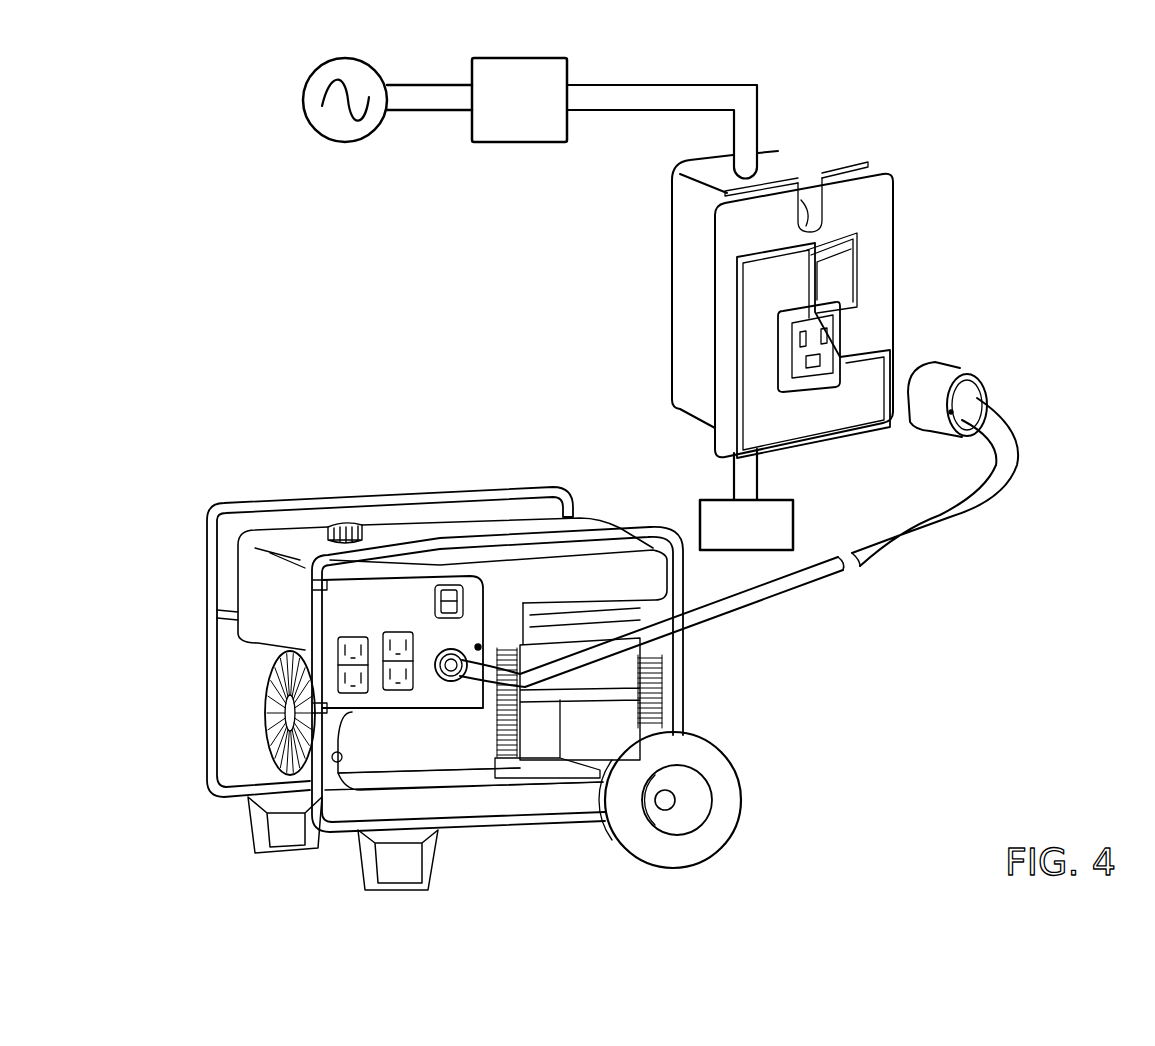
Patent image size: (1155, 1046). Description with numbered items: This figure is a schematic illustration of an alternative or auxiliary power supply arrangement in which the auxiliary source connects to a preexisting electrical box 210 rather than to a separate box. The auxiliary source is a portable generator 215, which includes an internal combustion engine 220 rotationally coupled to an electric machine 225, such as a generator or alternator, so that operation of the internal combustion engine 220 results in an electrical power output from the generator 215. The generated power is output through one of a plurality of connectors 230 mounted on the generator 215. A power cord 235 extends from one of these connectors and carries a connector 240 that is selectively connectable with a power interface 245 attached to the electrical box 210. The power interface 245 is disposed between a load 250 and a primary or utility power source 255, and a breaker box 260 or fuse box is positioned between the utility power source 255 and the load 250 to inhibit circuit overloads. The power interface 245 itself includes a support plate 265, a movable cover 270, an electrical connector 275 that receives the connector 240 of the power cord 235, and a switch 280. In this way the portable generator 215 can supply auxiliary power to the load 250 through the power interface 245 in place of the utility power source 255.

The electrical box 210 is at (775, 150).
The portable generator 215 is at (459, 465).
The internal combustion engine 220 is at (648, 688).
The electric machine 225 is at (438, 750).
The connectors 230 is at (383, 624).
The power cord 235 is at (980, 508).
The connector 240 is at (945, 375).
The power interface 245 is at (849, 461).
The load 250 is at (797, 527).
The utility power source 255 is at (348, 58).
The breaker box 260 is at (520, 58).
The support plate 265 is at (888, 200).
The movable cover 270 is at (870, 370).
The electrical connector 275 is at (833, 325).
The switch 280 is at (842, 272).